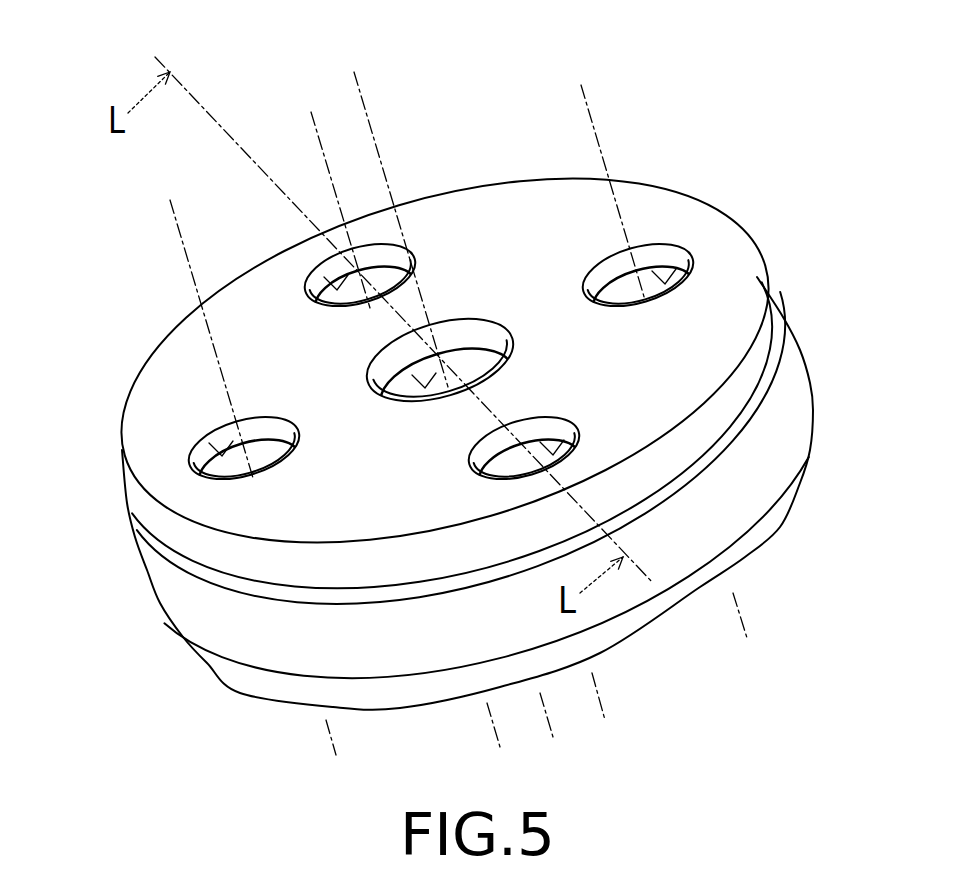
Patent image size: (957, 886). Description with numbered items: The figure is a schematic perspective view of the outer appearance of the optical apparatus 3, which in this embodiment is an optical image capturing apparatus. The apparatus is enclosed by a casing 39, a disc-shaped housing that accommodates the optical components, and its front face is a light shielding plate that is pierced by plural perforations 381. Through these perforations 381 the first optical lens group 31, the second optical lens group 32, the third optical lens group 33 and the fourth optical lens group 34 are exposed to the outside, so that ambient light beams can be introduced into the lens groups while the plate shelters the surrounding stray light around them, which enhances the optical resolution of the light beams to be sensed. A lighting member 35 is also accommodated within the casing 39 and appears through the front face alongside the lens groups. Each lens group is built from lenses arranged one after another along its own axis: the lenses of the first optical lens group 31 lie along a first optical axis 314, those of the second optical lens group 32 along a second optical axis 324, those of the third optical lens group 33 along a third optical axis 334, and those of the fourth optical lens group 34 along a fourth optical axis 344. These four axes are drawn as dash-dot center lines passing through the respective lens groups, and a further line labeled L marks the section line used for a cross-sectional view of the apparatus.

The optical apparatus 3 is at (782, 54).
The first optical lens group 31 is at (332, 255).
The second optical lens group 32 is at (222, 428).
The third optical lens group 33 is at (393, 344).
The fourth optical lens group 34 is at (672, 245).
The lighting member 35 is at (560, 432).
The casing 39 is at (797, 407).
The first optical axis 314 is at (322, 152).
The second optical axis 324 is at (177, 247).
The third optical axis 334 is at (363, 95).
The fourth optical axis 344 is at (603, 140).
The perforations 381 is at (320, 305).